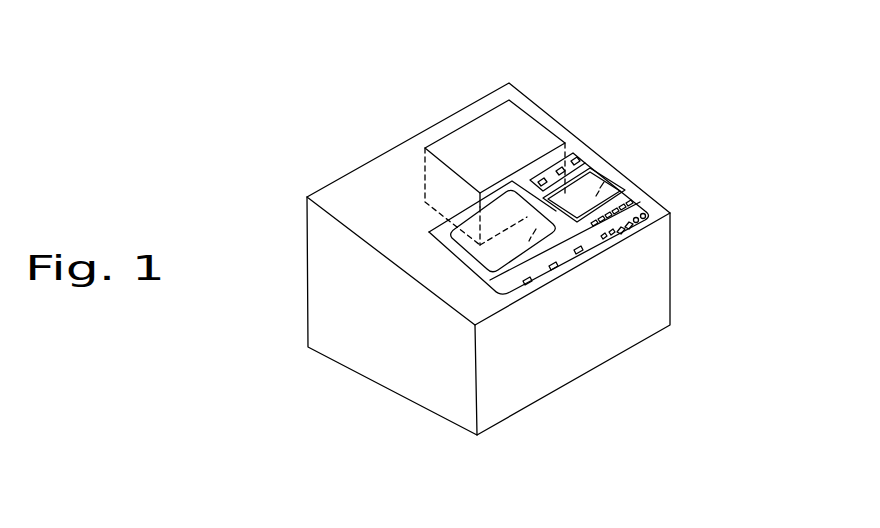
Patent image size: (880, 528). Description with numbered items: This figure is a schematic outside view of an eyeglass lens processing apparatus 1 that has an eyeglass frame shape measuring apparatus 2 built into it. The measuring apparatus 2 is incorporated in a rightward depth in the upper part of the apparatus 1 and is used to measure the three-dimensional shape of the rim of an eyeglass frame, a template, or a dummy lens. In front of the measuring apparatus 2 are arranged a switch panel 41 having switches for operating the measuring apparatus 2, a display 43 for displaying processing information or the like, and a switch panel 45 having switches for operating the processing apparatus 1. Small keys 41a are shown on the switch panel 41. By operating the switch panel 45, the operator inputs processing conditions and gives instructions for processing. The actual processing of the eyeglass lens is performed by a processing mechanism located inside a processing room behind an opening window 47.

The eyeglass lens processing apparatus 1 is at (443, 80).
The eyeglass frame shape measuring apparatus 2 is at (495, 120).
The switch panel 41 is at (585, 163).
The operation keys 41a is at (543, 177).
The display 43 is at (626, 190).
The switch panel 45 is at (592, 240).
The opening window 47 is at (458, 252).